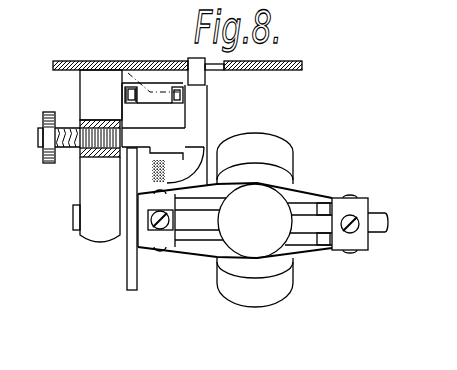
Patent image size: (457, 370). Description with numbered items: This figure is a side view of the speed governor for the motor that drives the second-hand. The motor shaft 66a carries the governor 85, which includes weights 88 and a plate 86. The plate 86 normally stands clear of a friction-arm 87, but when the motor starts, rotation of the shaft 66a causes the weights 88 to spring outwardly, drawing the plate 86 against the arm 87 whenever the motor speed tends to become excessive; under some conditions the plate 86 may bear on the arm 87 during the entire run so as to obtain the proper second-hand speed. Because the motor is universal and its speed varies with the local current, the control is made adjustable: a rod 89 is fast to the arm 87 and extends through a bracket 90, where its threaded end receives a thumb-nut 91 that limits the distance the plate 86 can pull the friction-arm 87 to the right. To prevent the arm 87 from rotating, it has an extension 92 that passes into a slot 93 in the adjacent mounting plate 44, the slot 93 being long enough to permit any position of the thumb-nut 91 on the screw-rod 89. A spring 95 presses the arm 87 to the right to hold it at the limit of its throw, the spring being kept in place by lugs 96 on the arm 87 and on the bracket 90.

The mounting plate 44 is at (290, 61).
The governor 85 is at (370, 200).
The plate 86 is at (127, 268).
The friction-arm 87 is at (203, 147).
The weights 88 is at (293, 158).
The rod 89 is at (178, 138).
The bracket 90 is at (85, 173).
The thumb-nut 91 is at (50, 112).
The extension 92 is at (194, 66).
The slot 93 is at (208, 69).
The spring 95 is at (138, 70).
The lugs 96 is at (174, 96).
The shaft 66a is at (374, 229).